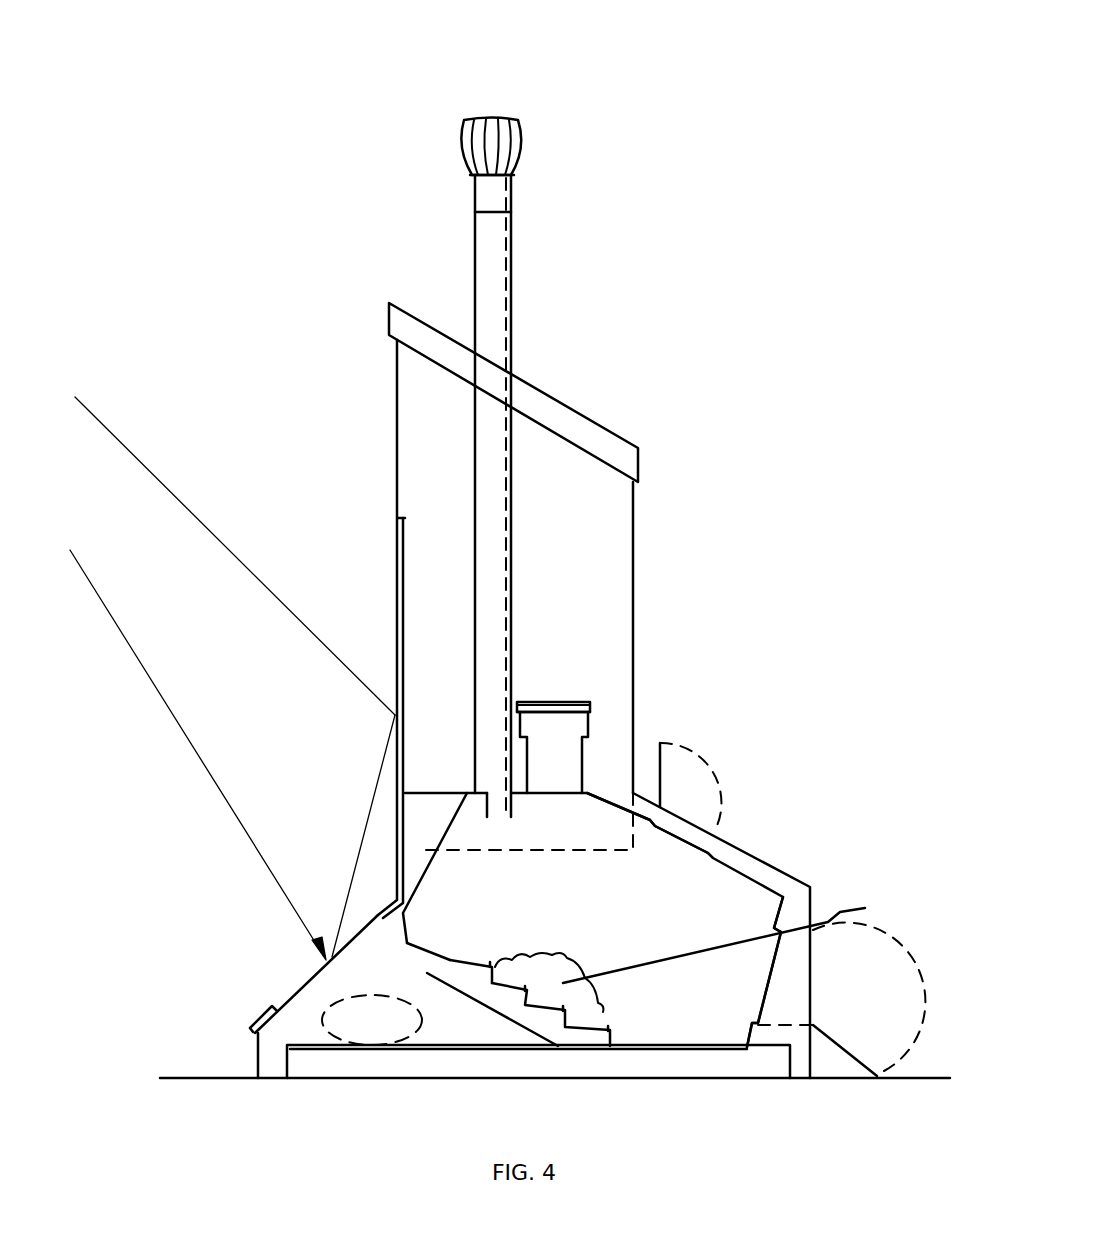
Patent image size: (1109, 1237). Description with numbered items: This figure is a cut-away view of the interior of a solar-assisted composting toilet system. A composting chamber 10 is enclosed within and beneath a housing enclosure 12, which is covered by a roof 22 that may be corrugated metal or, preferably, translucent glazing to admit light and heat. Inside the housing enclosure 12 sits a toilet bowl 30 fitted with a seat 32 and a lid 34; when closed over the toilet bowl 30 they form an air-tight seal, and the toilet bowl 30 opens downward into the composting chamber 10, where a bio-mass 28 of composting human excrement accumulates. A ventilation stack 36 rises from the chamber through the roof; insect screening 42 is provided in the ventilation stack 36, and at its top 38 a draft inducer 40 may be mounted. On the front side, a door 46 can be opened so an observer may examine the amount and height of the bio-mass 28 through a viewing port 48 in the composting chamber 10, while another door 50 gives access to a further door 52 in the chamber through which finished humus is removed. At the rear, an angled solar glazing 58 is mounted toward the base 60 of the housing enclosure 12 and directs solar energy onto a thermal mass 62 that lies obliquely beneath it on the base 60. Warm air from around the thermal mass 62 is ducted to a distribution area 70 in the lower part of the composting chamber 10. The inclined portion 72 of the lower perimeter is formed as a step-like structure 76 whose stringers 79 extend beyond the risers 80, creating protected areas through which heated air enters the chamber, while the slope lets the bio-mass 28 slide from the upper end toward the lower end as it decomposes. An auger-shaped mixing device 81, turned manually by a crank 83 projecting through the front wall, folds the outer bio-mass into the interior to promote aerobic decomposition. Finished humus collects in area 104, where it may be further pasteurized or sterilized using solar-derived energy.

The composting chamber 10 is at (614, 922).
The housing enclosure 12 is at (716, 556).
The roof 22 is at (583, 427).
The bio-mass 28 is at (540, 968).
The toilet bowl 30 is at (563, 767).
The seat 32 is at (590, 710).
The lid 34 is at (557, 702).
The ventilation stack 36 is at (487, 280).
The top of ventilation stack 38 is at (513, 177).
The draft inducer 40 is at (490, 132).
The insect screening 42 is at (512, 290).
The door 46 is at (665, 783).
The viewing port 48 is at (682, 837).
The door 50 is at (845, 1038).
The door 52 is at (770, 972).
The solar glazing 58 is at (303, 988).
The base 60 is at (440, 1078).
The thermal mass 62 is at (372, 1020).
The distribution area 70 is at (455, 975).
The inclined portion of lower perimeter 72 is at (437, 953).
The step-like structure 76 is at (582, 1030).
The stringers 79 is at (492, 1009).
The risers 80 is at (532, 992).
The mixing device 81 is at (753, 930).
The crank 83 is at (843, 915).
The humus collection area 104 is at (718, 1027).